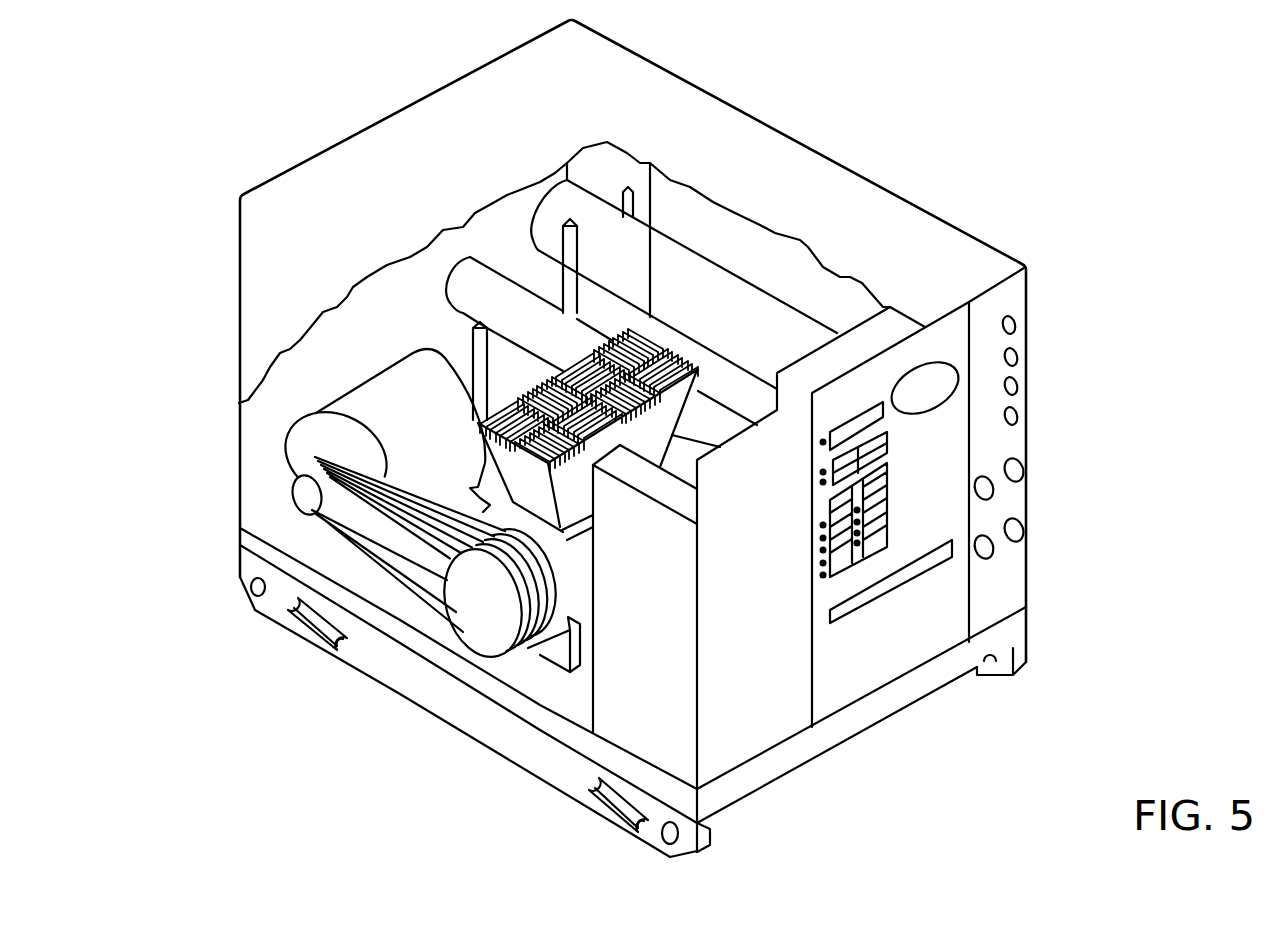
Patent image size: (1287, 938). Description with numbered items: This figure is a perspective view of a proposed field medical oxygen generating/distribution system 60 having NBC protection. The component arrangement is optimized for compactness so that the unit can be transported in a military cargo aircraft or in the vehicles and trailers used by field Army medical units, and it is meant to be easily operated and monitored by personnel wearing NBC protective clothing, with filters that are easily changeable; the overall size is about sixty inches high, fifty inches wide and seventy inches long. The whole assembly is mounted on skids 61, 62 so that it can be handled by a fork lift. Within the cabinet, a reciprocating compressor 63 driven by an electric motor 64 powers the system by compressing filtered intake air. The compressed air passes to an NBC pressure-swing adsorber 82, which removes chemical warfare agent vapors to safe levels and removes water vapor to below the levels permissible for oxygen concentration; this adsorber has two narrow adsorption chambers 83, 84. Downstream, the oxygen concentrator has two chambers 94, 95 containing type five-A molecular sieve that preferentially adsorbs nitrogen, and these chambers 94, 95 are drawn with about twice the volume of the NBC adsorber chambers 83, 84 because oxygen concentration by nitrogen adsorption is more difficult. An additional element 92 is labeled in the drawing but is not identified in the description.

The field medical oxygen generating/distribution system 60 is at (1003, 130).
The skid 61 is at (698, 843).
The skid 62 is at (1003, 672).
The compressor 63 is at (570, 587).
The electric motor 64 is at (292, 442).
The NBC pressure-swing adsorber 82 is at (447, 343).
The adsorption chamber 83 is at (447, 350).
The adsorption chamber 84 is at (450, 320).
The end cap 92 is at (537, 250).
The oxygen concentrator chamber 94 is at (540, 277).
The oxygen concentrator chamber 95 is at (552, 193).